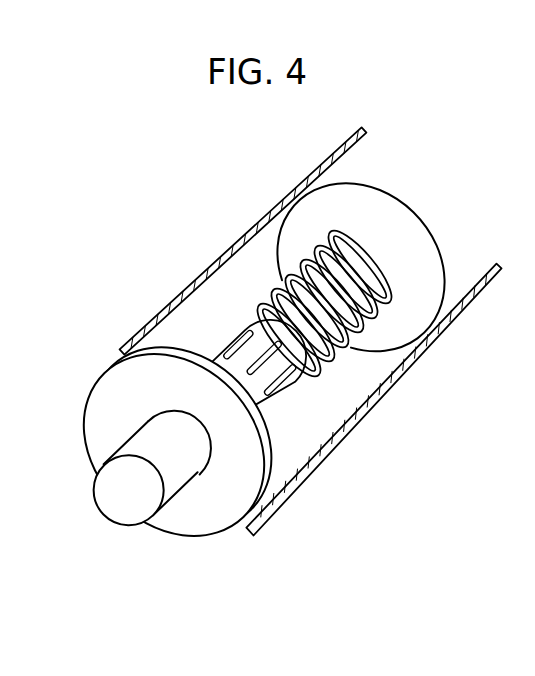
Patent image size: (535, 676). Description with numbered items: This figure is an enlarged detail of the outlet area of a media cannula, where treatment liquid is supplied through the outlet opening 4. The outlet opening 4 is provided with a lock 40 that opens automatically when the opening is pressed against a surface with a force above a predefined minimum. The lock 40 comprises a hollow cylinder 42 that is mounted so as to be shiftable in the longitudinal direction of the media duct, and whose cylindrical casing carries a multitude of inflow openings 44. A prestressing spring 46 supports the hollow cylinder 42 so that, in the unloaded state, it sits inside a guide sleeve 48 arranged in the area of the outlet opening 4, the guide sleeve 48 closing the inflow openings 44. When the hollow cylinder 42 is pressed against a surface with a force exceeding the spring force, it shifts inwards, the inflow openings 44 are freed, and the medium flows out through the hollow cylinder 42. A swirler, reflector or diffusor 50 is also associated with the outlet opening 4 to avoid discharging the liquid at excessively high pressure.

The outlet opening 4 is at (226, 498).
The lock 40 is at (277, 493).
The hollow cylinder 42 is at (181, 462).
The inflow openings 44 is at (292, 390).
The prestressing spring 46 is at (354, 338).
The guide sleeve 48 is at (143, 435).
The diffusor 50 is at (260, 382).